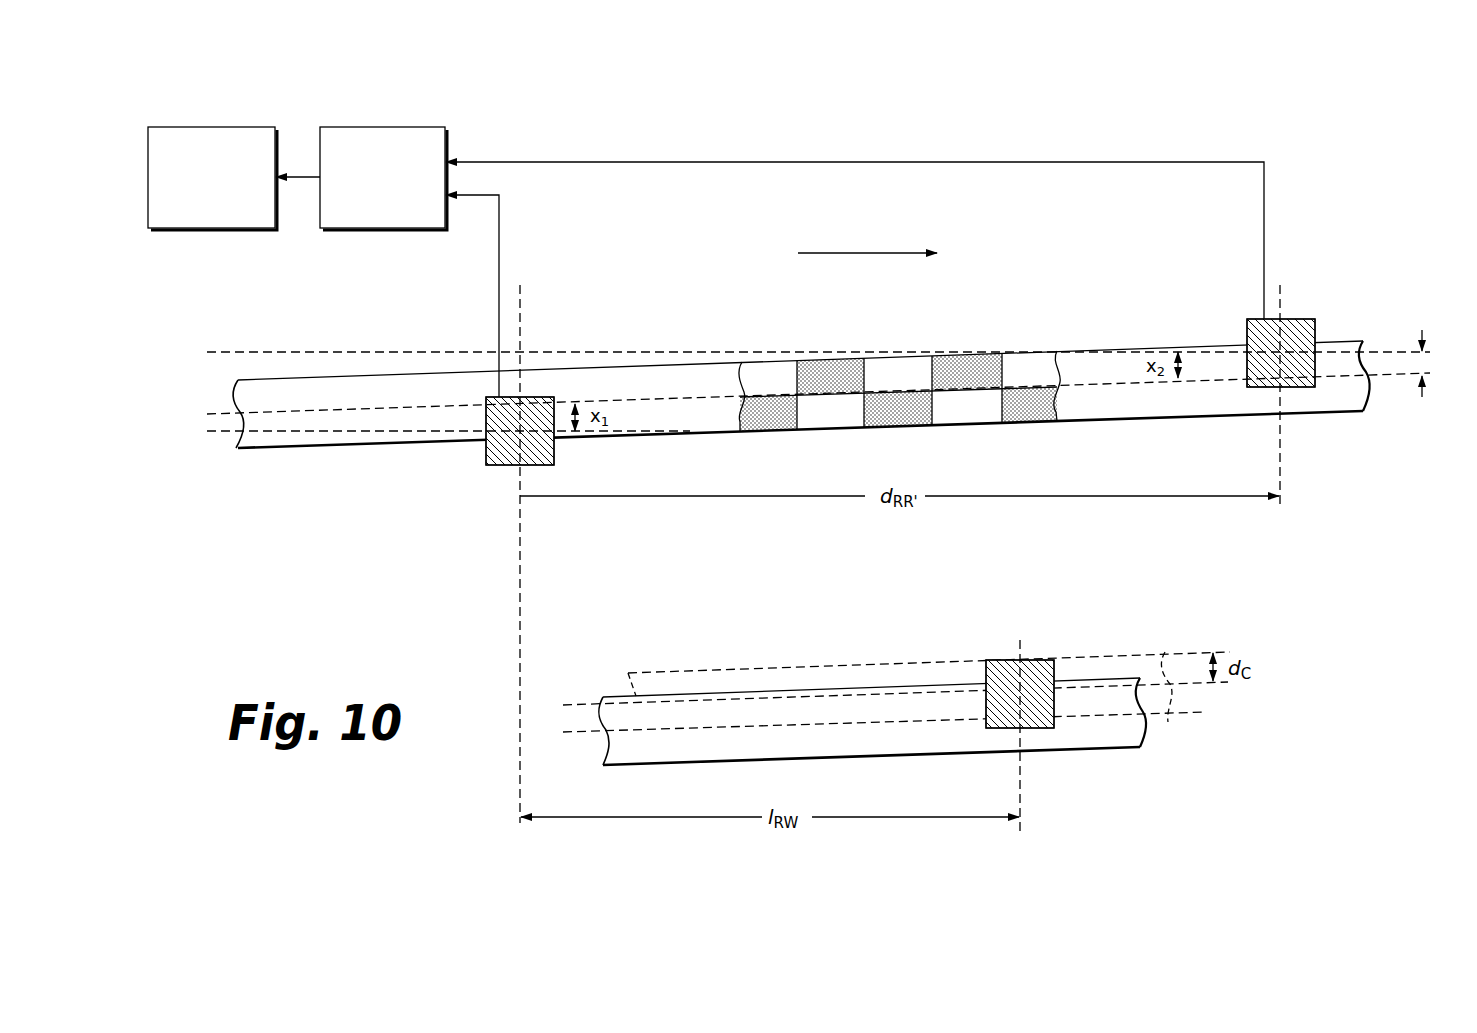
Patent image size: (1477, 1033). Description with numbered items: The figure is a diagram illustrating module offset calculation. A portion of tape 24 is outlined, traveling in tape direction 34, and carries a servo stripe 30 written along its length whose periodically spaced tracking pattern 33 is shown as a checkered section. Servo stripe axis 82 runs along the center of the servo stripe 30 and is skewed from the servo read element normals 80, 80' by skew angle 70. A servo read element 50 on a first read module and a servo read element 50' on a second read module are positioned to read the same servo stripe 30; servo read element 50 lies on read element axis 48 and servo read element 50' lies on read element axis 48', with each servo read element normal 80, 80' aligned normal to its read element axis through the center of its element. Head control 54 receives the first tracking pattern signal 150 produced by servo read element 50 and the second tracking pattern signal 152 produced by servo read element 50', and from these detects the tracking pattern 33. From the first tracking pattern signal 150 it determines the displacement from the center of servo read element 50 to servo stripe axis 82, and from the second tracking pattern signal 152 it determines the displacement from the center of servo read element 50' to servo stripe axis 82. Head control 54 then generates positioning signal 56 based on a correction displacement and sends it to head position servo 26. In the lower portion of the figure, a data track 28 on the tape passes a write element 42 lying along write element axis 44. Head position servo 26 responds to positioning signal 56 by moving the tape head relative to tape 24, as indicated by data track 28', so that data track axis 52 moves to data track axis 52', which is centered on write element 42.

The tape 24 is at (1143, 226).
The head position servo 26 is at (232, 127).
The data track 28 is at (872, 742).
The data track 28' is at (929, 668).
The servo stripe 30 is at (1115, 420).
The tracking pattern 33 is at (965, 342).
The tape direction 34 is at (880, 255).
The write element 42 is at (1035, 660).
The write element axis 44 is at (1022, 790).
The read element axis 48 is at (570, 554).
The read element axis 48' is at (1326, 397).
The servo read element 50 is at (490, 458).
The servo read element 50' is at (1305, 326).
The data track axis 52 is at (884, 754).
The data track axis 52' is at (895, 658).
The head control 54 is at (395, 127).
The positioning signal 56 is at (303, 176).
The skew angle 70 is at (1423, 363).
The servo read element normal 80 is at (441, 472).
The servo read element normal 80' is at (839, 311).
The servo stripe axis 82 is at (1432, 378).
The first tracking pattern signal 150 is at (499, 232).
The second tracking pattern signal 152 is at (1264, 210).